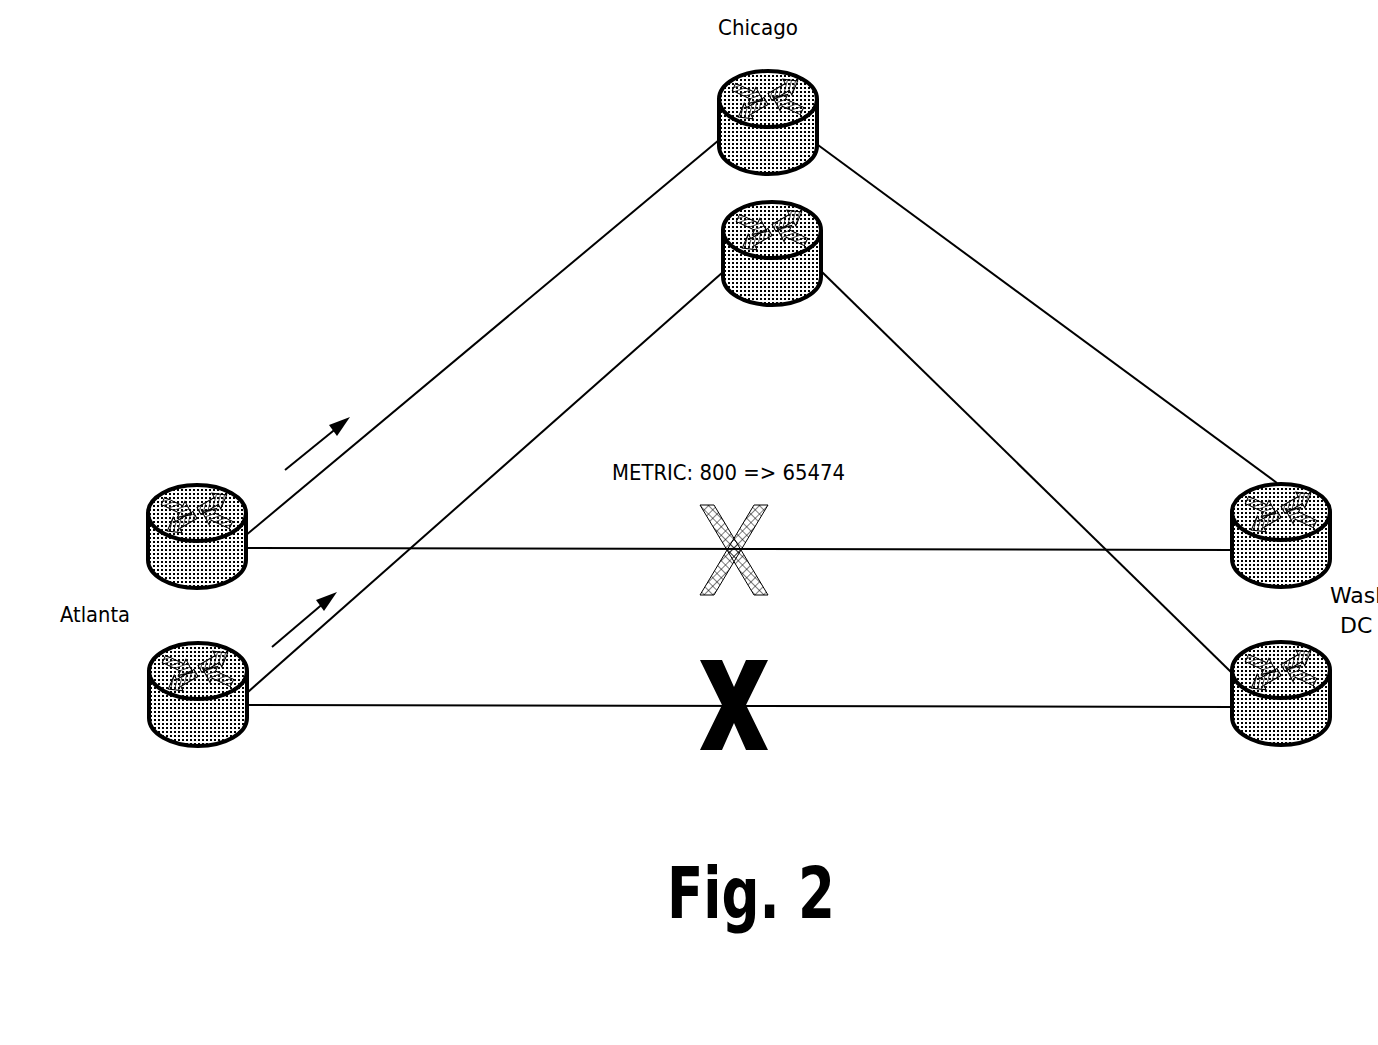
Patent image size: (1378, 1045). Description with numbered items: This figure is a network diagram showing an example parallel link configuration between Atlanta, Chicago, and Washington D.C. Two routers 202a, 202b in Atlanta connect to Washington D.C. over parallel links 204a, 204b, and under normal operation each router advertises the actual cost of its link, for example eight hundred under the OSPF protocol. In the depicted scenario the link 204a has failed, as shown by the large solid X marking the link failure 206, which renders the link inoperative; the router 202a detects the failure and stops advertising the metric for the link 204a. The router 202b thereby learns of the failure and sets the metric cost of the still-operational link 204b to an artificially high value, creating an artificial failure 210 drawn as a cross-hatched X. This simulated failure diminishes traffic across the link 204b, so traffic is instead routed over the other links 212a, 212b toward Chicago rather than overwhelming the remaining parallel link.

The router 202a is at (186, 748).
The router 202b is at (150, 498).
The link 204a is at (625, 705).
The link 204b is at (905, 549).
The link failure 206 is at (770, 660).
The artificial failure 210 is at (700, 597).
The link 212a is at (677, 310).
The link 212b is at (413, 385).